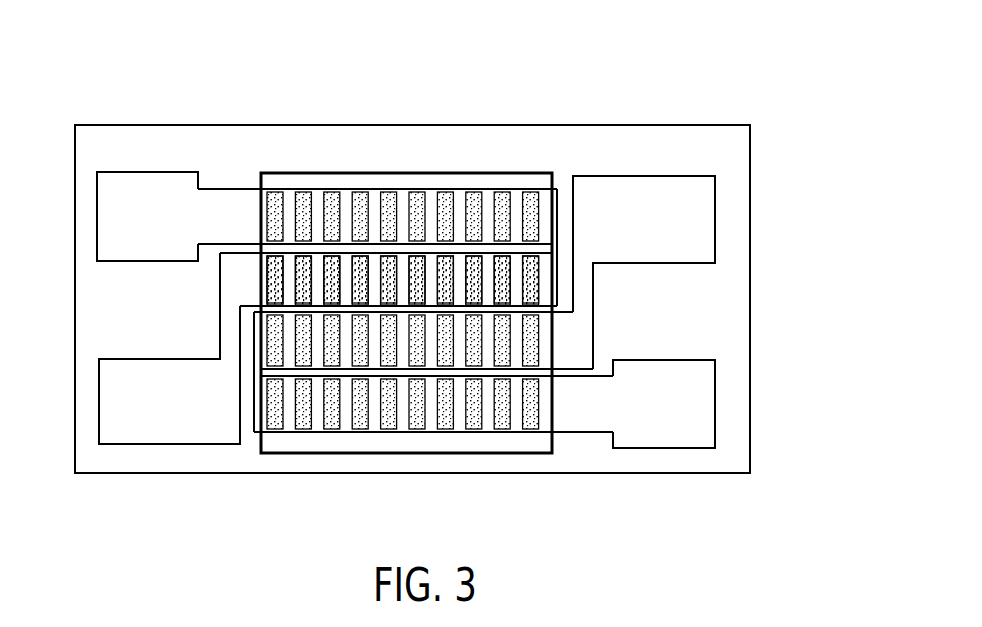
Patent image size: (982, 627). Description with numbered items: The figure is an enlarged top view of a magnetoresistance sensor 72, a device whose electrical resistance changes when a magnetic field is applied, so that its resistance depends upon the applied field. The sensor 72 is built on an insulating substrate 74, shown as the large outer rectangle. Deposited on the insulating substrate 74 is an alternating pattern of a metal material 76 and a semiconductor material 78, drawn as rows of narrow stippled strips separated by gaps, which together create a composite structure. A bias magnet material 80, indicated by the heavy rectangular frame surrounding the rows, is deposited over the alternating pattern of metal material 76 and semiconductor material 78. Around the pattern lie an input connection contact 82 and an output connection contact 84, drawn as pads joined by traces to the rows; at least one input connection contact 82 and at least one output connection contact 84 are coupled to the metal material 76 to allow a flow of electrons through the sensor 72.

The magnetoresistance sensor 72 is at (702, 42).
The insulating substrate 74 is at (518, 128).
The metal material 76 is at (403, 430).
The semiconductor material 78 is at (446, 430).
The bias magnet material 80 is at (355, 327).
The input connection contact 82 is at (658, 182).
The output connection contact 84 is at (658, 368).